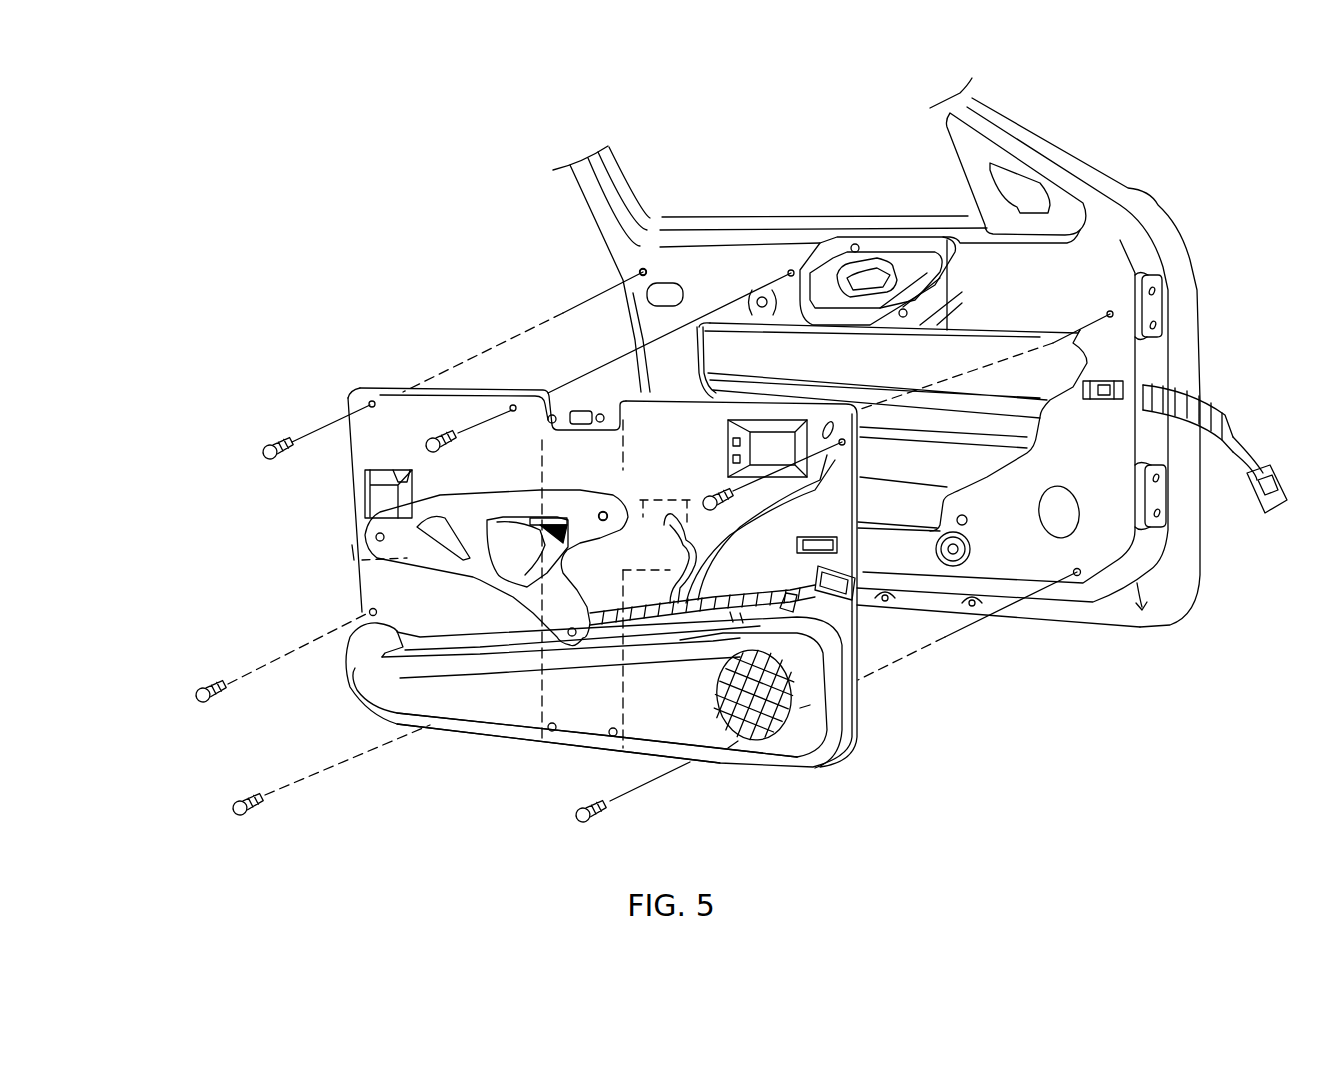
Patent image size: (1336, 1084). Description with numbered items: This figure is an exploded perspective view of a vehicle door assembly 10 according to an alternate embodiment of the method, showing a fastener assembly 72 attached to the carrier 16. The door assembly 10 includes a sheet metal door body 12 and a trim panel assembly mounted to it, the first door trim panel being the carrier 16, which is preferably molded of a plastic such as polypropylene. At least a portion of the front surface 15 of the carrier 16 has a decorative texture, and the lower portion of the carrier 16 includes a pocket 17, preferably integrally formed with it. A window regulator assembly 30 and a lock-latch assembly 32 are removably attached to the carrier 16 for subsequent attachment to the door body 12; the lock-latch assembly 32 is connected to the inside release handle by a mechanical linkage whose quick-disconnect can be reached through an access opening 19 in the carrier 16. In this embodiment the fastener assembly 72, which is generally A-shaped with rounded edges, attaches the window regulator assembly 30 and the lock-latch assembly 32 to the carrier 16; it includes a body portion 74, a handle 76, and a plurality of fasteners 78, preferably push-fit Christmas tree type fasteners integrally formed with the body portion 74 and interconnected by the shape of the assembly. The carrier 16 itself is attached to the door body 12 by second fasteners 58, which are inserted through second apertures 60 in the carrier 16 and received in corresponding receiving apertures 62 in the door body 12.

The vehicle door assembly 10 is at (569, 148).
The door body 12 is at (1062, 150).
The front surface 15 is at (487, 730).
The carrier 16 is at (858, 743).
The pocket 17 is at (478, 650).
The access opening 19 is at (404, 476).
The window regulator assembly 30 is at (579, 398).
The lock-latch assembly 32 is at (390, 475).
The second fasteners 58 is at (230, 803).
The second apertures 60 is at (370, 403).
The receiving apertures 62 is at (642, 270).
The fastener assembly 72 is at (356, 546).
The body portion 74 is at (545, 612).
The handle 76 is at (487, 520).
The fasteners 78 is at (607, 514).